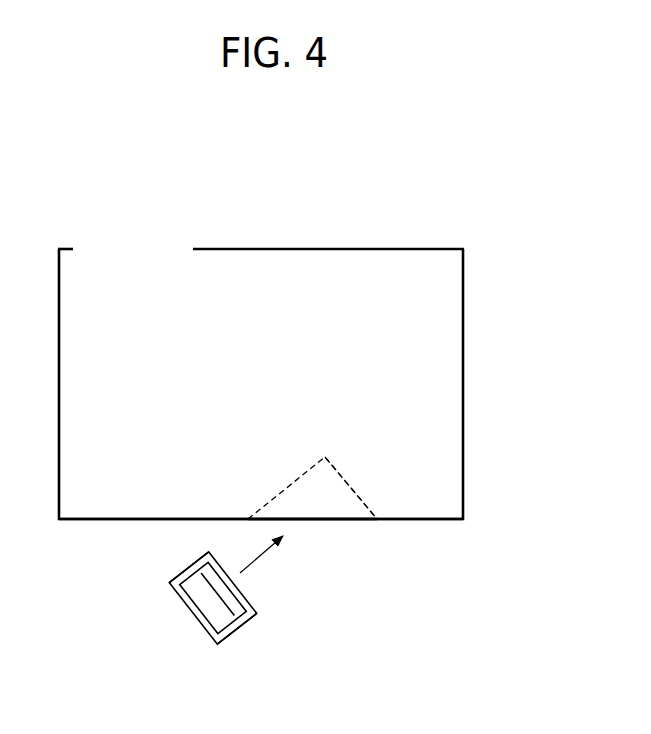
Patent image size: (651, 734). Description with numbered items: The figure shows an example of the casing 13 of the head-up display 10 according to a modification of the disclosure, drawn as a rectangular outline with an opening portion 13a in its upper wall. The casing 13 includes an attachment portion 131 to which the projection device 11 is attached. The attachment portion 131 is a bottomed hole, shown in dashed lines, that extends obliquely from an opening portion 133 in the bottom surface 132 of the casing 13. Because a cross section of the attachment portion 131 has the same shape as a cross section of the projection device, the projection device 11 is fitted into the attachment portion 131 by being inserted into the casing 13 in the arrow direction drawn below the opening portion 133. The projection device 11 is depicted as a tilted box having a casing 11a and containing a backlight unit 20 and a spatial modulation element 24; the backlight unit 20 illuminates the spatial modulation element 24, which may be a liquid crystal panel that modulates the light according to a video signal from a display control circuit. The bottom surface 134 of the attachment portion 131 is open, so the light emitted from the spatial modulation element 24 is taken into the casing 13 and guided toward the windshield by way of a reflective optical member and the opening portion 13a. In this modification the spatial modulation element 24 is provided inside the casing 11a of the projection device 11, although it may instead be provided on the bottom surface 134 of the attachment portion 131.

The head-up display 10 is at (282, 242).
The casing 13 is at (464, 266).
The opening portion 13a is at (128, 256).
The attachment portion 131 is at (281, 464).
The bottom surface 132 is at (95, 521).
The opening portion 133 is at (325, 521).
The bottom surface 134 is at (367, 497).
The projection device 11 is at (252, 628).
The casing 11a is at (232, 634).
The backlight unit 20 is at (197, 617).
The spatial modulation element 24 is at (203, 557).